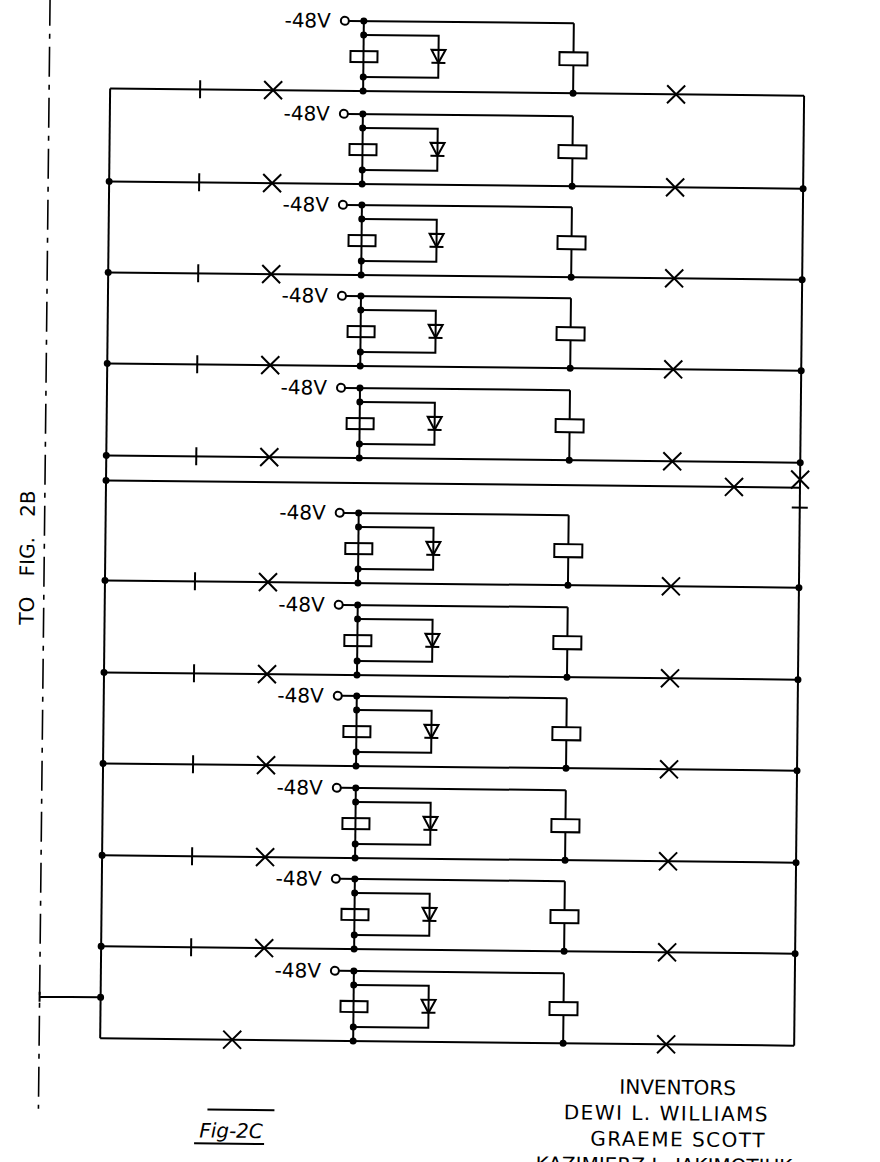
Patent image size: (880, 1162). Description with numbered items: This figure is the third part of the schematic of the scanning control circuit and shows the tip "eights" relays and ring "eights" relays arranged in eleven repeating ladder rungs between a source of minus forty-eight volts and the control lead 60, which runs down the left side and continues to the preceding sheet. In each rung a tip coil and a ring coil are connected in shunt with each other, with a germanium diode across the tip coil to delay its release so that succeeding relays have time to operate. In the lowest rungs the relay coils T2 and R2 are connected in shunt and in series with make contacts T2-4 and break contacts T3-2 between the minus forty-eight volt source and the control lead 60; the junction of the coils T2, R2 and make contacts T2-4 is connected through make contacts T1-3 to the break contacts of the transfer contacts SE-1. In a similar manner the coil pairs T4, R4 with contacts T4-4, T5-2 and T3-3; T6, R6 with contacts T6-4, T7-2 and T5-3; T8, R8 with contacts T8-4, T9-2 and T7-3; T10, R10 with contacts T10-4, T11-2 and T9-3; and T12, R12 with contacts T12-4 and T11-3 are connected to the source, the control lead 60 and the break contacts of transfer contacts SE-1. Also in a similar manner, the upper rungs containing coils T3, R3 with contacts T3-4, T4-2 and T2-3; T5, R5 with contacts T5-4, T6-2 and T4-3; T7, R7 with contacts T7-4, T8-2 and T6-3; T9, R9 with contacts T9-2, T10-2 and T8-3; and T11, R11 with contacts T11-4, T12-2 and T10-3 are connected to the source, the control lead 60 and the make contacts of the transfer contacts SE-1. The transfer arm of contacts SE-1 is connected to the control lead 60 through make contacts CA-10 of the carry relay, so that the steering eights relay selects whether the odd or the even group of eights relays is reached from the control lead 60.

The control lead 60 is at (104, 741).
The make contacts of carry relay CA CA-10 is at (733, 500).
The transfer contacts of steering eights relay SE SE-1 is at (814, 484).
The tip eights relay coil T2 is at (340, 548).
The tip eights relay coil T3 is at (345, 56).
The tip eights relay coil T4 is at (339, 640).
The tip eights relay coil T5 is at (344, 149).
The tip eights relay coil T6 is at (338, 730).
The tip eights relay coil T7 is at (343, 240).
The tip eights relay coil T8 is at (337, 822).
The tip eights relay coil T9 is at (342, 331).
The tip eights relay coil T10 is at (329, 913).
The tip eights relay coil T11 is at (335, 422).
The tip eights relay coil T12 is at (328, 1005).
The ring eights relay coil R2 is at (584, 550).
The ring eights relay coil R3 is at (589, 58).
The ring eights relay coil R4 is at (583, 642).
The ring eights relay coil R5 is at (588, 151).
The ring eights relay coil R6 is at (582, 733).
The ring eights relay coil R7 is at (587, 242).
The ring eights relay coil R8 is at (581, 825).
The ring eights relay coil R9 is at (586, 333).
The ring eights relay coil R10 is at (586, 916).
The ring eights relay coil R11 is at (591, 425).
The ring eights relay coil R12 is at (585, 1008).
The break contacts of relay T4 T4-2 is at (200, 78).
The make contacts of relay T3 T3-4 is at (273, 79).
The make contacts of relay T2 T2-3 is at (680, 83).
The break contacts of relay T6 T6-2 is at (199, 171).
The make contacts of relay T5 T5-4 is at (272, 172).
The make contacts of relay T4 T4-3 is at (679, 176).
The break contacts of relay T8 T8-2 is at (198, 262).
The make contacts of relay T7 T7-4 is at (271, 263).
The make contacts of relay T6 T6-3 is at (678, 267).
The break contacts of relay T10 T10-2 is at (196, 353).
The contacts of relay T9 T9-2 is at (231, 599).
The make contacts of relay T8 T8-3 is at (677, 358).
The break contacts of relay T12 T12-2 is at (195, 445).
The make contacts of relay T11 T11-4 is at (268, 446).
The make contacts of relay T10 T10-3 is at (675, 450).
The break contacts of relay T3 T3-2 is at (194, 570).
The make contacts of relay T2 T2-4 is at (267, 571).
The make contacts of relay T1 T1-3 is at (674, 575).
The break contacts of relay T5 T5-2 is at (193, 662).
The make contacts of relay T4 T4-4 is at (266, 663).
The make contacts of relay T3 T3-3 is at (673, 667).
The break contacts of relay T7 T7-2 is at (193, 753).
The make contacts of relay T6 T6-4 is at (266, 754).
The make contacts of relay T5 T5-3 is at (672, 758).
The make contacts of relay T8 T8-4 is at (265, 846).
The make contacts of relay T7 T7-3 is at (672, 850).
The break contacts of relay T11 T11-2 is at (190, 936).
The make contacts of relay T10 T10-4 is at (263, 937).
The make contacts of relay T9 T9-3 is at (671, 941).
The make contacts of relay T12 T12-4 is at (231, 1028).
The make contacts of relay T11 T11-3 is at (669, 1033).